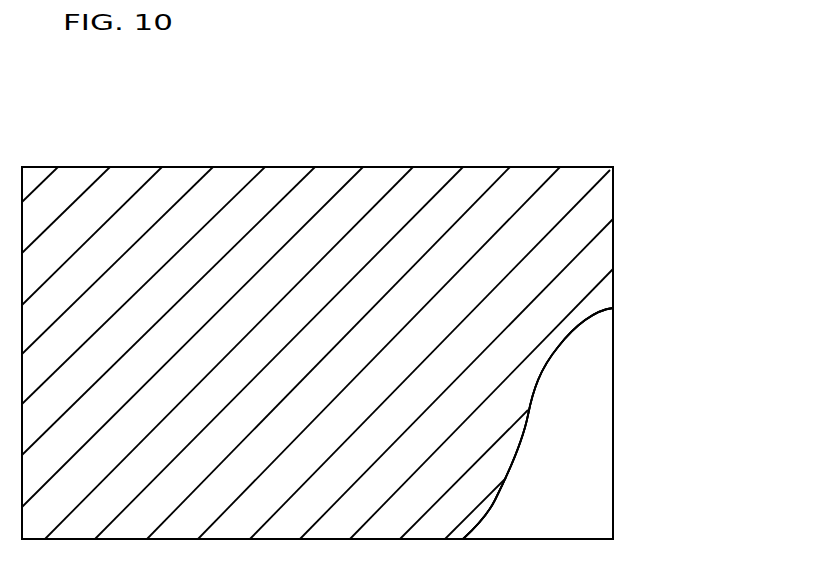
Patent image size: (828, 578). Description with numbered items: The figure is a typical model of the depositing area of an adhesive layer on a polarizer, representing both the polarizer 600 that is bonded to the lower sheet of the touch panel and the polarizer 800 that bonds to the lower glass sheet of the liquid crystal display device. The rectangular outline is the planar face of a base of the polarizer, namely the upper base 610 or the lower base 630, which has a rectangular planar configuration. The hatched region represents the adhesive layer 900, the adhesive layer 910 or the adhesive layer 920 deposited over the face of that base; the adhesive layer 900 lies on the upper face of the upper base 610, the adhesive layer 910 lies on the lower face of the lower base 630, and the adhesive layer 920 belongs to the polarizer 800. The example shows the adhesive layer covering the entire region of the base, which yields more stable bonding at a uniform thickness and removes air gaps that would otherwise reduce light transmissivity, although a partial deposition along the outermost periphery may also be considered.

The polarizer 600 is at (334, 156).
The polarizer 800 is at (317, 300).
The adhesive layer 900 is at (387, 353).
The adhesive layer 910 is at (602, 296).
The adhesive layer 920 is at (387, 353).
The upper base 610 is at (604, 466).
The lower base 630 is at (607, 423).